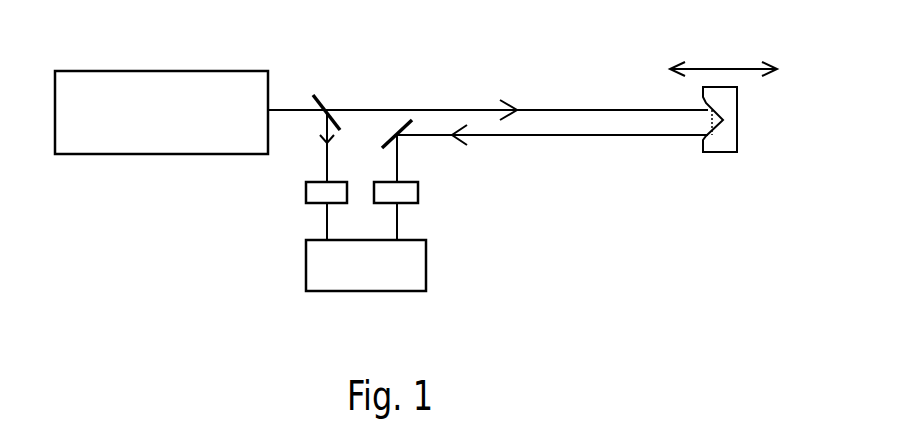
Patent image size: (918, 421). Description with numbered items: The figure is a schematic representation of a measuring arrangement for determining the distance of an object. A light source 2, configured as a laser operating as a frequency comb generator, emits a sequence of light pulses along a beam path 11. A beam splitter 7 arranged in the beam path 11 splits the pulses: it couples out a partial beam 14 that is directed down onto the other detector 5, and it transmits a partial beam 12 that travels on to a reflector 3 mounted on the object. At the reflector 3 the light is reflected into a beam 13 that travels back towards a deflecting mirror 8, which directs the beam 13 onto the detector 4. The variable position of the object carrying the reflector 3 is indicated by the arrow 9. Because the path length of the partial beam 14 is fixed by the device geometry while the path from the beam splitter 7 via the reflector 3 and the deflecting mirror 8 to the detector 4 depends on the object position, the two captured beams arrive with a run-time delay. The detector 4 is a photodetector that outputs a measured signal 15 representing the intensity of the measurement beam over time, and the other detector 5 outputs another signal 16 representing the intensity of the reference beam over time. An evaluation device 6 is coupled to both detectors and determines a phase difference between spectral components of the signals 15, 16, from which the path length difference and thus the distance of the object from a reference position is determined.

The light source 2 is at (116, 69).
The reflector 3 is at (723, 152).
The detector 4 is at (417, 193).
The other detector 5 is at (306, 197).
The evaluation device 6 is at (426, 276).
The beam splitter 7 is at (318, 101).
The deflecting mirror 8 is at (397, 133).
The arrow 9 is at (723, 69).
The beam path 11 is at (283, 110).
The partial beam 12 is at (538, 110).
The beam 13 is at (608, 135).
The partial beam 14 is at (327, 161).
The measured signal 15 is at (397, 222).
The other signal 16 is at (327, 225).